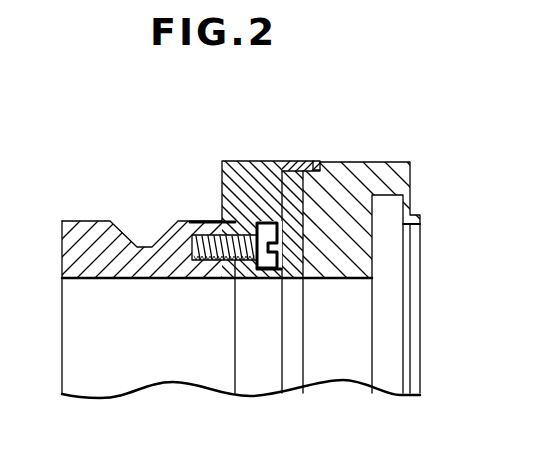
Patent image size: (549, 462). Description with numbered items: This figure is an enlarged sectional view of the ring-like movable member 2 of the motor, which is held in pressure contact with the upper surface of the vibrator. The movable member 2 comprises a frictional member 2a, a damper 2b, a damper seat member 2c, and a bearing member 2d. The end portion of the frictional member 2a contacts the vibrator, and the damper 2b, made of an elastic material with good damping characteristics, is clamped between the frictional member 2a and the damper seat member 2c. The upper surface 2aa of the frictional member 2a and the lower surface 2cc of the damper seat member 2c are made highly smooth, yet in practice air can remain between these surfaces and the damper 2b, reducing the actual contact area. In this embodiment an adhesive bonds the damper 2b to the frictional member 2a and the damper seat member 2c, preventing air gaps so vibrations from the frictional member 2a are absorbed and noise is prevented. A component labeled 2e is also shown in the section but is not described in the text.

The movable member 2 is at (379, 133).
The frictional member 2a is at (395, 170).
The upper surface of the frictional member 2aa is at (302, 270).
The damper 2b is at (293, 188).
The damper seat member 2c is at (243, 175).
The lower surface of the damper seat member 2cc is at (288, 180).
The bearing member 2d is at (90, 230).
The set screw 2e is at (210, 235).